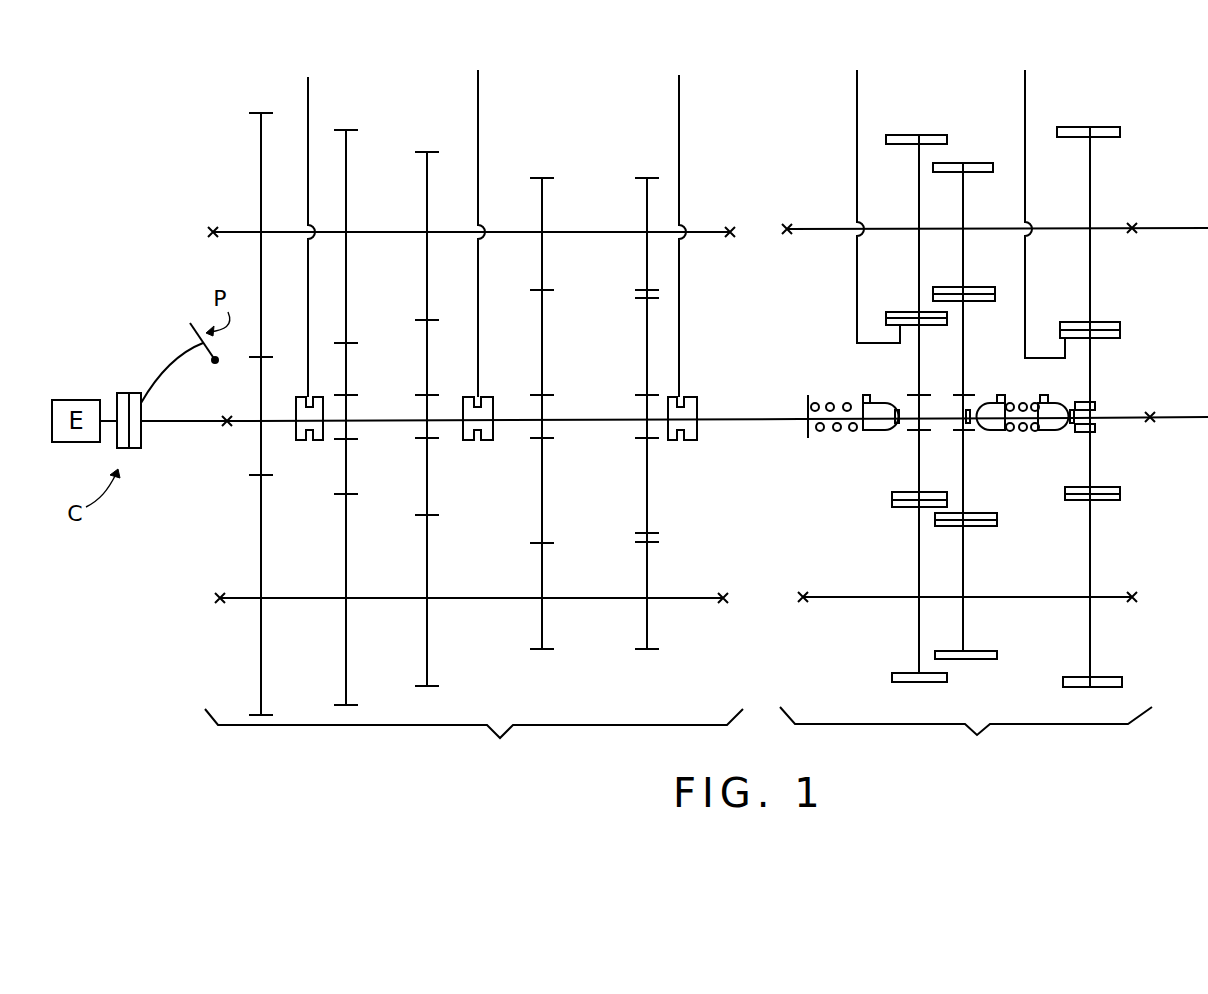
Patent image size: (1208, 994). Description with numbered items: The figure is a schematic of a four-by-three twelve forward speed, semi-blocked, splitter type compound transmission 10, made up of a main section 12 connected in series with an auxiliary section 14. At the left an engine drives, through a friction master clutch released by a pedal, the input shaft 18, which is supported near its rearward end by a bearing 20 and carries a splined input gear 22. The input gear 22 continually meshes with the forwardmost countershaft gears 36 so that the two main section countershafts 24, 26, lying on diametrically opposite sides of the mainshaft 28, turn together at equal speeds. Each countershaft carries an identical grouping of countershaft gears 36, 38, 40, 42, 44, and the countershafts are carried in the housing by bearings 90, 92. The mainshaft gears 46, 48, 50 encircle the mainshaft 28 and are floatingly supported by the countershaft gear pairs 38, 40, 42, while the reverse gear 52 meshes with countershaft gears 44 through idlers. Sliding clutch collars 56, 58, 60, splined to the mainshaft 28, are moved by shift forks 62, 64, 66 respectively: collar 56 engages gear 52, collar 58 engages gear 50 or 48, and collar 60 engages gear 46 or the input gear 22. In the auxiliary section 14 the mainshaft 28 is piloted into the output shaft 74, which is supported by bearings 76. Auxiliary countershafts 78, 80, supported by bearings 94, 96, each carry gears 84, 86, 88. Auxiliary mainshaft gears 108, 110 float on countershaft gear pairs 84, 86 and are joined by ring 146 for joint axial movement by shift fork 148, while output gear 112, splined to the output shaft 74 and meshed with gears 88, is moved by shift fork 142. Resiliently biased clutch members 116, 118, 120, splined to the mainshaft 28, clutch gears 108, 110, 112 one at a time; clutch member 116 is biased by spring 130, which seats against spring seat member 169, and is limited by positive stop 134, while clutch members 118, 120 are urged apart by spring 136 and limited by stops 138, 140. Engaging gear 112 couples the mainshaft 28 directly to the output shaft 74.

The compound transmission 10 is at (755, 137).
The main section 12 is at (474, 738).
The auxiliary section 14 is at (966, 737).
The input shaft 18 is at (198, 420).
The bearing 20 is at (227, 428).
The input gear 22 is at (258, 360).
The main section countershaft 24 is at (365, 233).
The main section countershaft 26 is at (390, 597).
The mainshaft 28 is at (590, 421).
The countershaft gears 36 is at (261, 146).
The countershaft gears 38 is at (346, 148).
The countershaft gears 40 is at (427, 180).
The countershaft gears 42 is at (542, 205).
The countershaft gears 44 is at (647, 185).
The mainshaft gear 46 is at (349, 357).
The mainshaft gear 48 is at (427, 384).
The mainshaft gear 50 is at (542, 374).
The reverse gear 52 is at (647, 372).
The sliding clutch collar 56 is at (684, 441).
The sliding clutch collar 58 is at (481, 441).
The sliding clutch collar 60 is at (313, 441).
The shift fork 62 is at (679, 373).
The shift fork 64 is at (478, 372).
The shift fork 66 is at (308, 293).
The output shaft 74 is at (1150, 416).
The bearings 76 is at (1150, 425).
The auxiliary section countershaft 78 is at (966, 226).
The auxiliary section countershaft 80 is at (1045, 597).
The auxiliary countershaft gears 84 is at (919, 205).
The auxiliary countershaft gears 86 is at (963, 271).
The auxiliary countershaft gears 88 is at (1090, 170).
The bearing 90 is at (213, 230).
The bearing 92 is at (730, 230).
The bearing 94 is at (787, 227).
The bearing 96 is at (1134, 228).
The auxiliary section mainshaft gear 108 is at (919, 392).
The auxiliary section mainshaft gear 110 is at (963, 393).
The output gear 112 is at (1093, 352).
The resiliently biased clutch member 116 is at (866, 431).
The resiliently biased clutch member 118 is at (988, 431).
The resiliently biased clutch member 120 is at (1050, 431).
The spring 130 is at (830, 402).
The positive stop 134 is at (897, 424).
The spring 136 is at (1022, 402).
The stop 138 is at (966, 425).
The stop 140 is at (1094, 406).
The shift fork 142 is at (1026, 291).
The ring 146 is at (965, 302).
The shift fork 148 is at (858, 82).
The spring seat member 169 is at (808, 393).